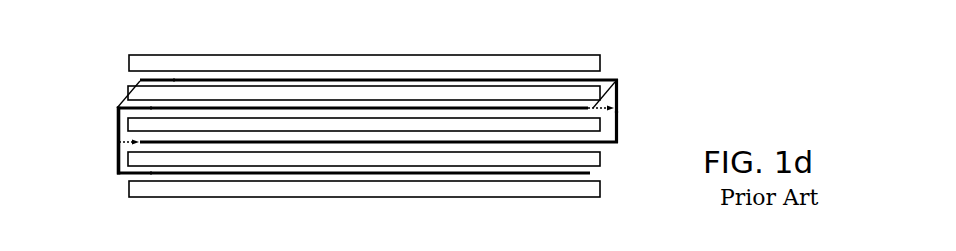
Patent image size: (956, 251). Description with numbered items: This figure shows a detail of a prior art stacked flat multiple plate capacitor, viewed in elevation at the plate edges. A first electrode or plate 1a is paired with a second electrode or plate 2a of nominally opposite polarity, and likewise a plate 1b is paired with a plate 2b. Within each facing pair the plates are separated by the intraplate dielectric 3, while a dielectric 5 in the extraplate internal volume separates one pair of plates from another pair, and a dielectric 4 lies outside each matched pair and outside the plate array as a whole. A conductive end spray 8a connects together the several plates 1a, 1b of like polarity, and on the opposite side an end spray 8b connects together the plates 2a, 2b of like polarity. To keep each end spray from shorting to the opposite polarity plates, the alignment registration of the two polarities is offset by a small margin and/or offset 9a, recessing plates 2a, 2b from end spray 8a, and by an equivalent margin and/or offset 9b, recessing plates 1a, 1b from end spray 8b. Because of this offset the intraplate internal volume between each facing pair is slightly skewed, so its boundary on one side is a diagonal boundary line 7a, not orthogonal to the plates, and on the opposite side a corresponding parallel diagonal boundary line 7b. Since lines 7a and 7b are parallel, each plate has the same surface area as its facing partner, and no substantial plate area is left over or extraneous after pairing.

The first electrode or plate 1a is at (610, 82).
The plate 1b is at (570, 143).
The second electrode or plate 2a is at (525, 108).
The plate 2b is at (517, 173).
The dielectric 3 is at (128, 92).
The dielectric 4 is at (303, 62).
The dielectric 5 is at (118, 124).
The boundary line 7a is at (617, 97).
The diagonal boundary line 7b is at (138, 80).
The conductive end spray 8a is at (617, 125).
The end spray 8b is at (117, 168).
The margin and/or offset 9a is at (602, 112).
The margin and/or offset 9b is at (125, 143).